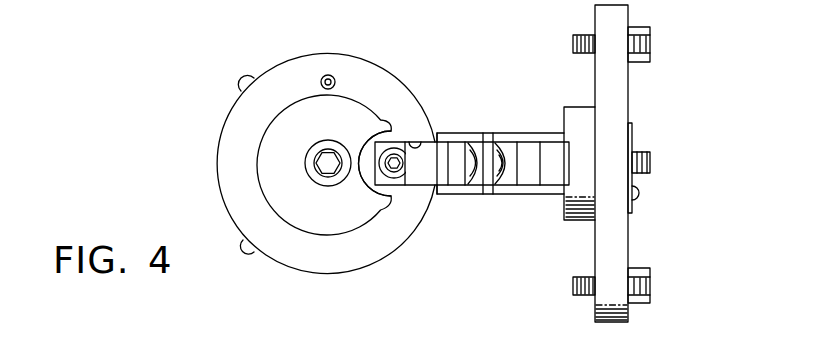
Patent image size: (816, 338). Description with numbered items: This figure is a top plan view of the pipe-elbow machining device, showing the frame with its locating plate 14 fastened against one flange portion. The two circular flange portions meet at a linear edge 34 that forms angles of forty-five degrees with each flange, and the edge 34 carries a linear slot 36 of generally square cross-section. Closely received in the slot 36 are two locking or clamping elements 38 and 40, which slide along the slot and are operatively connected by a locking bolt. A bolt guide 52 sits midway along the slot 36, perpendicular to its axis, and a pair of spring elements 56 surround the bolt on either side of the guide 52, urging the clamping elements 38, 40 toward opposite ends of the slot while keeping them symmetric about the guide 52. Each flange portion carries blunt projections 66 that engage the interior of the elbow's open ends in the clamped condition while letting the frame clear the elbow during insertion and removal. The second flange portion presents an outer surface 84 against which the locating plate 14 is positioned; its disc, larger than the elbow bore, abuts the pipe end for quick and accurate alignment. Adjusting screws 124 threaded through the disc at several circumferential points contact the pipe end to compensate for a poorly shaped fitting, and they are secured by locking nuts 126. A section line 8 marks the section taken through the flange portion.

The section line 8- 8 is at (238, 74).
The locating plate 14 is at (630, 88).
The edge 34 is at (458, 190).
The linear slot 36 is at (414, 144).
The clamping element 38 is at (422, 180).
The clamping element 40 is at (550, 185).
The bolt guide 52 is at (491, 190).
The spring elements 56 is at (510, 138).
The blunt projections 66 is at (251, 76).
The outer surface 84 is at (336, 79).
The adjusting screws 124 is at (645, 290).
The locking nuts 126 is at (641, 272).